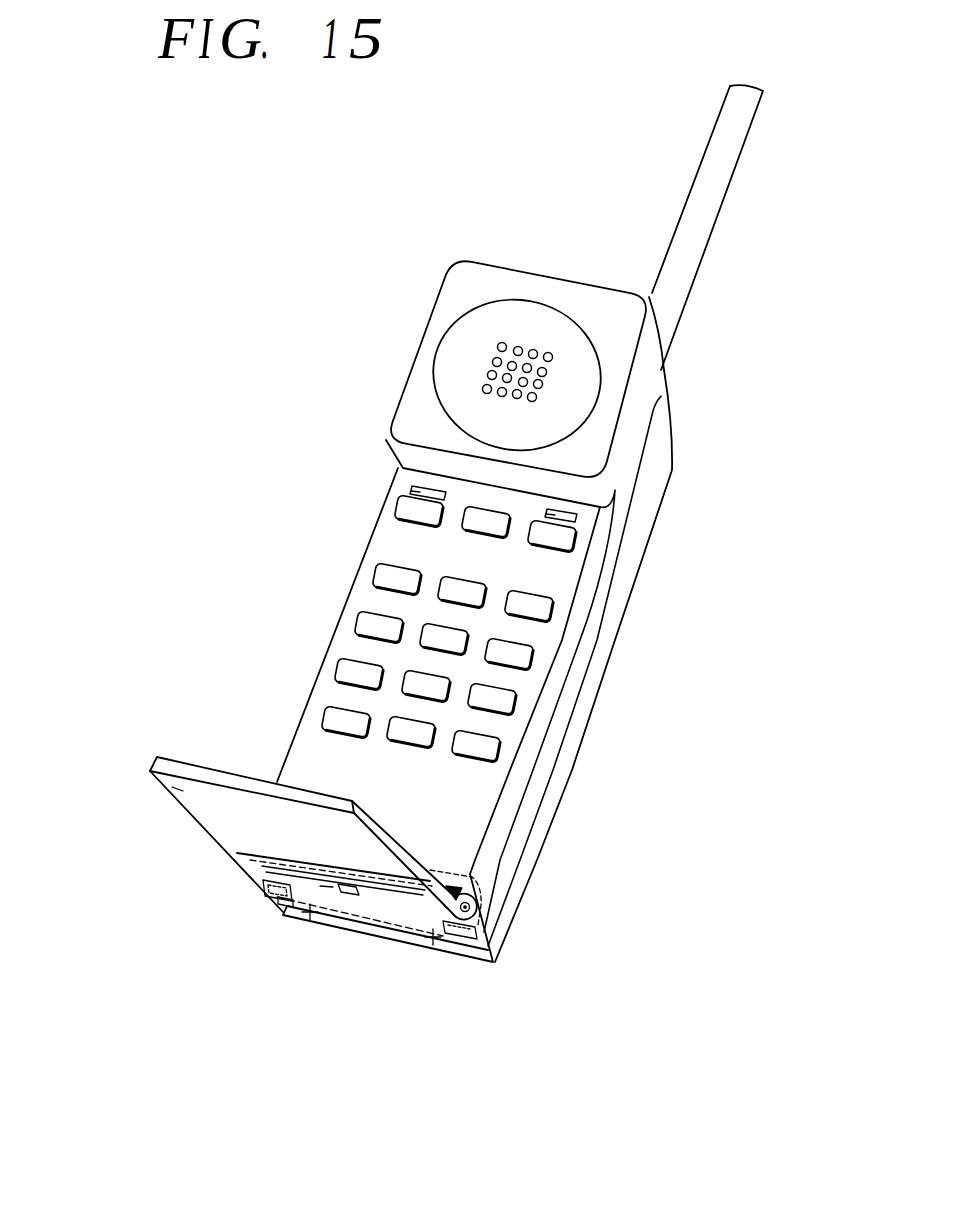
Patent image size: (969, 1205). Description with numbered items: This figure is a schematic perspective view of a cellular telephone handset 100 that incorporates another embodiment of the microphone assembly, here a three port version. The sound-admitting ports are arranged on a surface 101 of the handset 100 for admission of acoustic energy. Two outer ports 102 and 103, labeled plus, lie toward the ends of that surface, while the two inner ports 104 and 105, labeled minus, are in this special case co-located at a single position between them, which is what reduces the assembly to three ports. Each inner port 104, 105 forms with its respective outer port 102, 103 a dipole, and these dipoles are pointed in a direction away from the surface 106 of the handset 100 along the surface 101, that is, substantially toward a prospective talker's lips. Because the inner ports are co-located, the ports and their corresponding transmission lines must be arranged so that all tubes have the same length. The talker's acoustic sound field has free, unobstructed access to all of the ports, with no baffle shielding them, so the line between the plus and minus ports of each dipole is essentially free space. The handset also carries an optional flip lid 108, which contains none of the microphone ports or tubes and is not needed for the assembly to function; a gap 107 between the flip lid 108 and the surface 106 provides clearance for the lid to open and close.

The cellular handset 100 is at (633, 393).
The surface 101 is at (410, 907).
The outer port 102 is at (478, 941).
The outer port 103 is at (267, 901).
The inner port 104 is at (343, 887).
The inner port 105 is at (345, 953).
The surface 106 is at (473, 803).
The gap 107 is at (237, 853).
The flip lid 108 is at (152, 781).